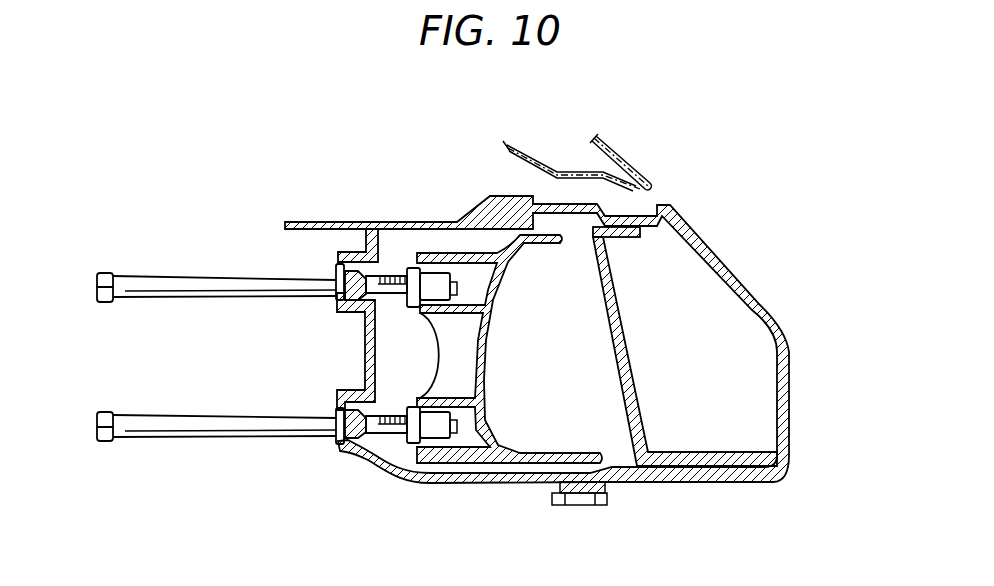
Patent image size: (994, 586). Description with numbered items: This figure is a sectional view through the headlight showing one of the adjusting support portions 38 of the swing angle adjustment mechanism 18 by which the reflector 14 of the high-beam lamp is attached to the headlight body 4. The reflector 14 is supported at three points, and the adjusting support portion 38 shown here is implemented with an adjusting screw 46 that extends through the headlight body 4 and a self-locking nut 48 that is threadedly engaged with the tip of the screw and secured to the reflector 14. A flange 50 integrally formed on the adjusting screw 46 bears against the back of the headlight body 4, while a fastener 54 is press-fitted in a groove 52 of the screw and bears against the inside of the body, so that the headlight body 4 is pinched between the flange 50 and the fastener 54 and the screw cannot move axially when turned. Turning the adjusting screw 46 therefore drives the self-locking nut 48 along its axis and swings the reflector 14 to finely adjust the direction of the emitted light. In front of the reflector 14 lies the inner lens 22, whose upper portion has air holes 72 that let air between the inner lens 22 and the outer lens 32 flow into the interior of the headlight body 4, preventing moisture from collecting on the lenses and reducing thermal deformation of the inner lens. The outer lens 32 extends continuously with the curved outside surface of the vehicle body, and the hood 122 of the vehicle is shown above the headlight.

The headlight body 4 is at (367, 364).
The reflector 14 is at (480, 340).
The swing angle adjustment mechanism 18 is at (181, 258).
The inner lens 22 is at (628, 332).
The outer lens 32 is at (763, 308).
The adjusting support portion 38 is at (282, 300).
The adjusting screw 46 is at (266, 277).
The self-locking nut 48 is at (408, 265).
The flange 50 is at (337, 288).
The groove 52 is at (366, 299).
The fastener 54 is at (370, 328).
The air hole 72 is at (612, 260).
The hood 122 is at (645, 168).